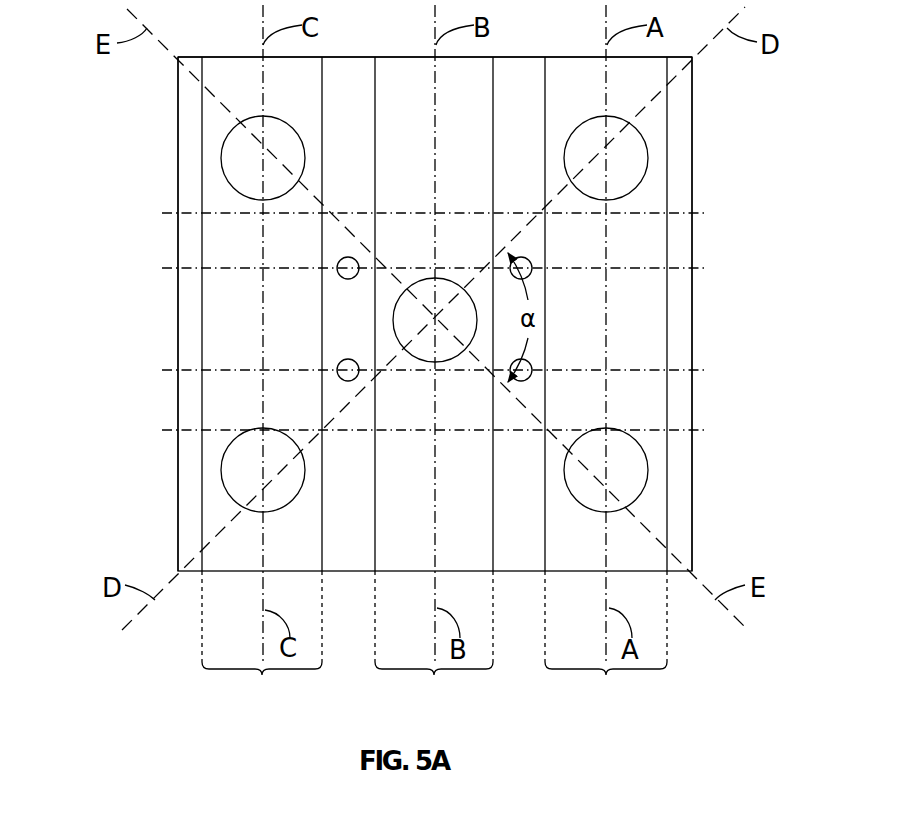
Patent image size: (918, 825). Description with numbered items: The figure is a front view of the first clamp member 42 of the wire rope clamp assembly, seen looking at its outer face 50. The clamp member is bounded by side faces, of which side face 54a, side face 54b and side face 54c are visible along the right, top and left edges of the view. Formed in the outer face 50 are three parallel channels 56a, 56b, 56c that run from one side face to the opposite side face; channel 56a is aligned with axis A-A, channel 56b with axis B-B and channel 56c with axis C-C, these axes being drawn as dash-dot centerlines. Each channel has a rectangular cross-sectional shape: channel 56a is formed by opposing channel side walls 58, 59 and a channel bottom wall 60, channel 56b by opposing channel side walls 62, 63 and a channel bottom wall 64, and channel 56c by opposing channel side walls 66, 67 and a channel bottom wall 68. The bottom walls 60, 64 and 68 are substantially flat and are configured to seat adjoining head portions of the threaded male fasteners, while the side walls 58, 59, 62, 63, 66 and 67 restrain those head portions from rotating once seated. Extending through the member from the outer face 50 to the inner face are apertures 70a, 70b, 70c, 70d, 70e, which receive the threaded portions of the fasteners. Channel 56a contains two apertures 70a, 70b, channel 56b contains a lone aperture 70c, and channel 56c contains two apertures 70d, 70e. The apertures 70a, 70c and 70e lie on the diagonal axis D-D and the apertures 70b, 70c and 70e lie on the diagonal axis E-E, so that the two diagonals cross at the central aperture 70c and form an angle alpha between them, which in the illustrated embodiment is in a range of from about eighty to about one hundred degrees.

The first clamp member 42 is at (234, 34).
The outer face 50 is at (675, 322).
The side face 54a is at (692, 488).
The side face 54b is at (670, 56).
The side face 54c is at (178, 320).
The channel 56a is at (606, 640).
The channel 56b is at (434, 640).
The channel 56c is at (262, 640).
The channel side wall 58 is at (667, 545).
The channel side wall 59 is at (545, 545).
The channel bottom wall 60 is at (613, 533).
The channel side wall 62 is at (493, 545).
The channel side wall 63 is at (375, 545).
The channel bottom wall 64 is at (422, 545).
The channel side wall 66 is at (320, 545).
The channel side wall 67 is at (202, 548).
The channel bottom wall 68 is at (245, 537).
The aperture 70a is at (615, 468).
The aperture 70b is at (613, 172).
The aperture 70c is at (447, 297).
The aperture 70d is at (258, 470).
The aperture 70e is at (260, 170).